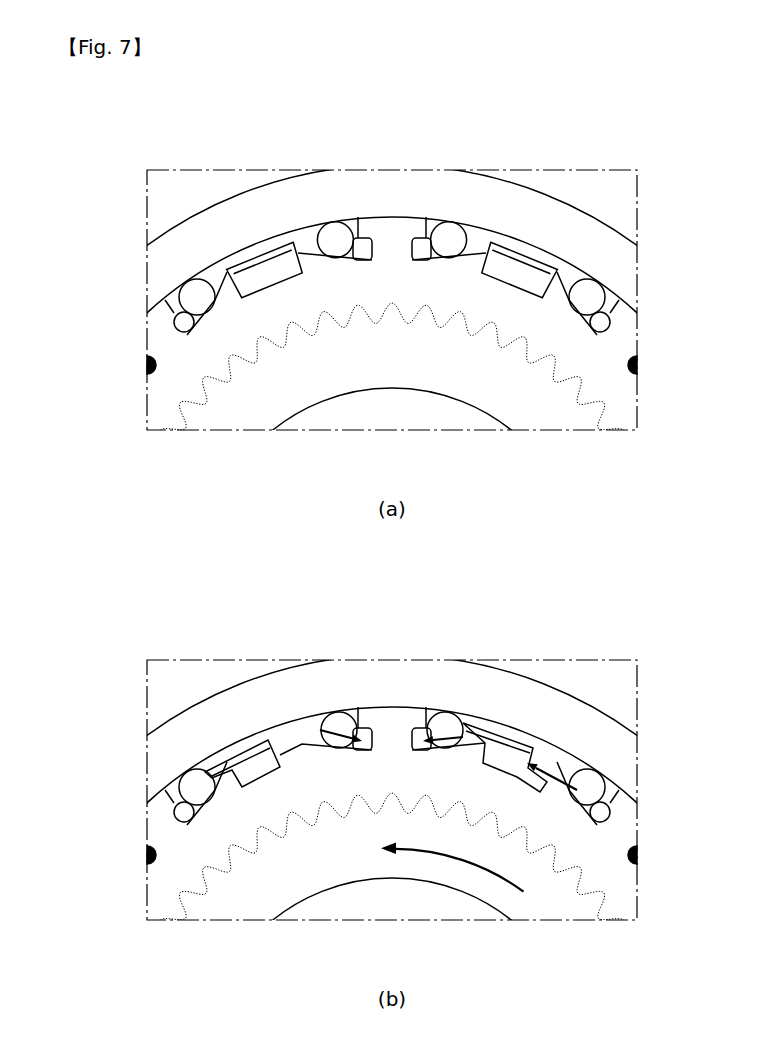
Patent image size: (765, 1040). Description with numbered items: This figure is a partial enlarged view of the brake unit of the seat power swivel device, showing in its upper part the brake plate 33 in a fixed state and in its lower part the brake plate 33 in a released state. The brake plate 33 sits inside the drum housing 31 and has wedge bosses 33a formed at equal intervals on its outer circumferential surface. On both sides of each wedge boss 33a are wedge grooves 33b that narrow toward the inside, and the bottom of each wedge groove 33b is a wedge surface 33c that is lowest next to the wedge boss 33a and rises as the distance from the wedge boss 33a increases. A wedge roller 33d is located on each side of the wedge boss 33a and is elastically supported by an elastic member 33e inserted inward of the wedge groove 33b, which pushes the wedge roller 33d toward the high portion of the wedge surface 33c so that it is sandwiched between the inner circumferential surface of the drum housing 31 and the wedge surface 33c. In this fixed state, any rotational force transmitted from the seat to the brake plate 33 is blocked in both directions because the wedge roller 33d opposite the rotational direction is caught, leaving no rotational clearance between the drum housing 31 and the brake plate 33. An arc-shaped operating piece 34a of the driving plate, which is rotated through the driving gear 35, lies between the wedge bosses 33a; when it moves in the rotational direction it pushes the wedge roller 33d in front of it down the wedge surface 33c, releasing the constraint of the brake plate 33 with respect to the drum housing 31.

The drum housing 31 is at (222, 226).
The brake plate 33 is at (600, 352).
The wedge boss 33a is at (378, 230).
The wedge groove 33b is at (413, 240).
The wedge surface 33c is at (330, 252).
The wedge roller 33d is at (470, 245).
The elastic member 33e is at (452, 240).
The operating piece 34a is at (525, 255).
The driving gear 35 is at (548, 365).